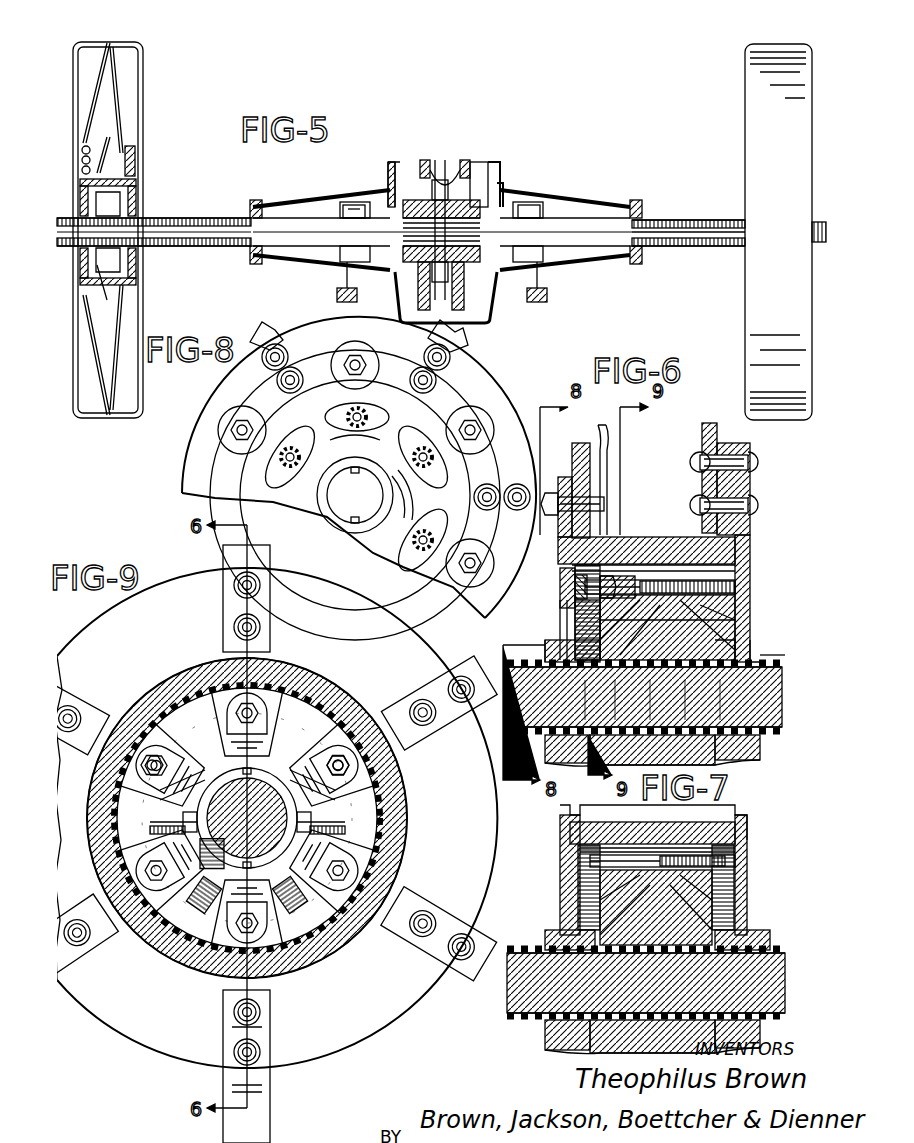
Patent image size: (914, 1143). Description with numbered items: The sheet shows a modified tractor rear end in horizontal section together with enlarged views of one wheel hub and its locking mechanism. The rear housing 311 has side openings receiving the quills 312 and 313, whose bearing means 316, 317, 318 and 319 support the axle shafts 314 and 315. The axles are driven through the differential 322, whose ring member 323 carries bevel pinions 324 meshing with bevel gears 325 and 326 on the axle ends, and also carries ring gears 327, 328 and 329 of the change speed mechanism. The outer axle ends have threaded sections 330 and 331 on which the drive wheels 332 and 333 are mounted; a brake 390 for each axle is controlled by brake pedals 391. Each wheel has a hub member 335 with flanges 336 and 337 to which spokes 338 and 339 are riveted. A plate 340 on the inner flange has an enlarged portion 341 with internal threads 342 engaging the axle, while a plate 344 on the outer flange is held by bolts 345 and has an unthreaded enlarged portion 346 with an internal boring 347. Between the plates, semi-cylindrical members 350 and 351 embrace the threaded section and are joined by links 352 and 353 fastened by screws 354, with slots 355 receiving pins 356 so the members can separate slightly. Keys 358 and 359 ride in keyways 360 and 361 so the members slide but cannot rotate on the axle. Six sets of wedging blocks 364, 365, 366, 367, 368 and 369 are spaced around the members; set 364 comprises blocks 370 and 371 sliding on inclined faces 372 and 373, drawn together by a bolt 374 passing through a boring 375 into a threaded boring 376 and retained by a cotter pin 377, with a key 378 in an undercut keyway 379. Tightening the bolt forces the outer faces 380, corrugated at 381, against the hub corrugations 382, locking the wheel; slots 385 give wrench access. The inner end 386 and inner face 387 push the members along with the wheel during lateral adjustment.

In FIG. 5, the rear housing 311 is at (503, 175).
In FIG. 5, the quill 312 is at (318, 262).
In FIG. 5, the quill 313 is at (560, 262).
In FIG. 5, the axle shaft 314 is at (272, 230).
In FIG. 8, the axle shaft 314 is at (350, 497).
In FIG. 6, the axle shaft 314 is at (770, 708).
In FIG. 7, the axle shaft 314 is at (768, 978).
In FIG. 5, the axle shaft 315 is at (590, 228).
In FIG. 5, the bearing means 316 is at (239, 229).
In FIG. 5, the bearing means 317 is at (372, 209).
In FIG. 5, the bearing means 318 is at (515, 209).
In FIG. 5, the bearing means 319 is at (634, 208).
In FIG. 5, the differential 322 is at (448, 160).
In FIG. 5, the ring member 323 is at (425, 272).
In FIG. 5, the bevel pinions 324 is at (411, 184).
In FIG. 5, the differential bevel gear 325 is at (374, 253).
In FIG. 5, the differential bevel gear 326 is at (515, 253).
In FIG. 5, the ring gear 327 is at (448, 140).
In FIG. 5, the ring gear 328 is at (465, 160).
In FIG. 5, the ring gear 329 is at (494, 174).
In FIG. 5, the threaded section 330 is at (178, 228).
In FIG. 6, the threaded section 330 is at (782, 660).
In FIG. 5, the threaded section 331 is at (692, 222).
In FIG. 5, the drive wheel 332 is at (150, 36).
In FIG. 5, the drive wheel 333 is at (752, 78).
In FIG. 5, the hub member 335 is at (125, 152).
In FIG. 6, the hub member 335 is at (650, 578).
In FIG. 7, the hub member 335 is at (638, 830).
In FIG. 5, the flange 336 is at (88, 160).
In FIG. 8, the flange 336 is at (465, 378).
In FIG. 6, the flange 336 is at (567, 476).
In FIG. 5, the flange 337 is at (136, 160).
In FIG. 6, the flange 337 is at (733, 445).
In FIG. 5, the spokes 338 is at (108, 90).
In FIG. 8, the spokes 338 is at (260, 335).
In FIG. 6, the spokes 338 is at (608, 430).
In FIG. 5, the spokes 339 is at (122, 112).
In FIG. 6, the spokes 339 is at (723, 463).
In FIG. 6, the plate 340 is at (736, 555).
In FIG. 9, the plate 340 is at (247, 818).
In FIG. 6, the enlarged portion 341 is at (753, 643).
In FIG. 6, the internal threads 342 is at (788, 643).
In FIG. 8, the plate 344 is at (396, 452).
In FIG. 8, the bolts 345 is at (230, 430).
In FIG. 6, the bolts 345 is at (597, 500).
In FIG. 6, the enlarged portion 346 is at (560, 648).
In FIG. 6, the internal boring 347 is at (520, 662).
In FIG. 6, the semi-cylindrical member 350 is at (740, 588).
In FIG. 7, the semi-cylindrical member 350 is at (680, 920).
In FIG. 9, the semi-cylindrical member 350 is at (247, 772).
In FIG. 6, the semi-cylindrical member 351 is at (760, 758).
In FIG. 7, the semi-cylindrical member 351 is at (590, 1042).
In FIG. 9, the semi-cylindrical member 351 is at (318, 960).
In FIG. 9, the link 352 is at (164, 842).
In FIG. 9, the link 353 is at (318, 806).
In FIG. 9, the screws 354 is at (172, 852).
In FIG. 9, the slots 355 is at (278, 752).
In FIG. 9, the pins 356 is at (329, 848).
In FIG. 9, the key 358 is at (215, 728).
In FIG. 9, the key 359 is at (212, 905).
In FIG. 5, the keyway 360 is at (188, 240).
In FIG. 6, the keyway 360 is at (785, 665).
In FIG. 7, the keyway 360 is at (770, 945).
In FIG. 6, the keyway 361 is at (782, 726).
In FIG. 7, the keyway 361 is at (785, 1016).
In FIG. 9, the keyway 361 is at (261, 818).
In FIG. 8, the wedging block set 364 is at (335, 415).
In FIG. 9, the wedging block set 364 is at (222, 700).
In FIG. 8, the wedging block set 365 is at (446, 478).
In FIG. 9, the wedging block set 365 is at (336, 730).
In FIG. 8, the wedging block set 366 is at (444, 516).
In FIG. 9, the wedging block set 366 is at (350, 862).
In FIG. 9, the wedging block set 367 is at (290, 960).
In FIG. 9, the wedging block set 368 is at (165, 912).
In FIG. 8, the wedging block set 369 is at (278, 465).
In FIG. 9, the wedging block set 369 is at (165, 740).
In FIG. 5, the wedging block 370 is at (86, 196).
In FIG. 8, the wedging block 370 is at (450, 400).
In FIG. 6, the wedging block 370 is at (556, 645).
In FIG. 9, the wedging block 370 is at (288, 684).
In FIG. 5, the wedging block 371 is at (136, 190).
In FIG. 6, the wedging block 371 is at (742, 608).
In FIG. 6, the inclined face 372 is at (674, 700).
In FIG. 6, the inclined face 373 is at (709, 700).
In FIG. 8, the bolt 374 is at (396, 464).
In FIG. 6, the bolt 374 is at (640, 580).
In FIG. 9, the bolt 374 is at (395, 767).
In FIG. 6, the boring 375 is at (588, 580).
In FIG. 6, the threaded boring 376 is at (740, 572).
In FIG. 6, the cotter pin 377 is at (620, 580).
In FIG. 6, the key 378 is at (606, 700).
In FIG. 6, the undercut keyway 379 is at (639, 700).
In FIG. 6, the outer faces 380 is at (740, 540).
In FIG. 7, the outer faces 380 is at (690, 850).
In FIG. 6, the corrugations 381 is at (738, 546).
In FIG. 9, the corrugations 381 is at (262, 655).
In FIG. 9, the corrugations 382 is at (272, 668).
In FIG. 8, the slots 385 is at (356, 439).
In FIG. 6, the slots 385 is at (560, 605).
In FIG. 6, the inner end 386 is at (574, 700).
In FIG. 6, the inner face 387 is at (740, 630).
In FIG. 5, the brake 390 is at (346, 207).
In FIG. 5, the brake pedals 391 is at (345, 300).